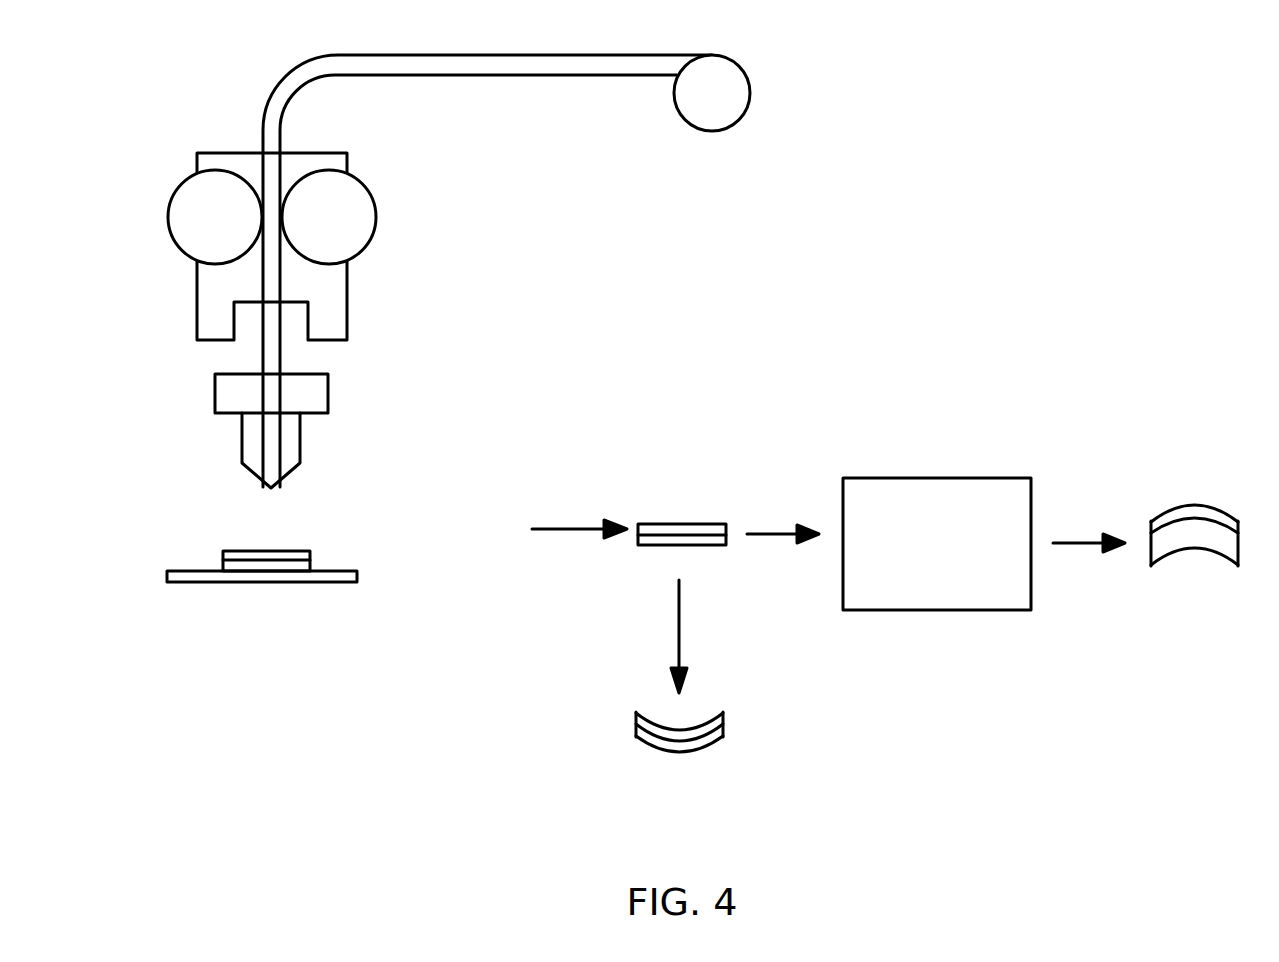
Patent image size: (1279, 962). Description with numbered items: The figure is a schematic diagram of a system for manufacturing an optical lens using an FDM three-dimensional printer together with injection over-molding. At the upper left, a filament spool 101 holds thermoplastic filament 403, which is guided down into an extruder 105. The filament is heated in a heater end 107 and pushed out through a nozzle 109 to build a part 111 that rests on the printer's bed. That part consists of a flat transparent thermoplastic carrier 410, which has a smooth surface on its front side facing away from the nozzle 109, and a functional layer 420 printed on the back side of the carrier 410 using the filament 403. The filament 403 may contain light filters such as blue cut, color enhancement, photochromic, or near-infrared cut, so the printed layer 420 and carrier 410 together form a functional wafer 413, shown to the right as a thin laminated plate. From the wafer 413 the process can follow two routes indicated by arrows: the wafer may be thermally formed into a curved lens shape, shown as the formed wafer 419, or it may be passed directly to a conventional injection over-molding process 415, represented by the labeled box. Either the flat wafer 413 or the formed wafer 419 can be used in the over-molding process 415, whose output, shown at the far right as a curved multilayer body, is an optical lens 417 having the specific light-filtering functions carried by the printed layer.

The filament spool 101 is at (750, 92).
The thermoplastic filament 403 is at (288, 70).
The extruder 105 is at (207, 280).
The heater end 107 is at (328, 392).
The nozzle 109 is at (242, 465).
The part 111 is at (167, 574).
The functional layer 420 is at (293, 552).
The TP carrier 410 is at (308, 567).
The functional wafer 413 is at (703, 478).
The injection over-molding process 415 is at (973, 478).
The optical lens 417 is at (1198, 605).
The thermally formed functional wafer 419 is at (765, 748).